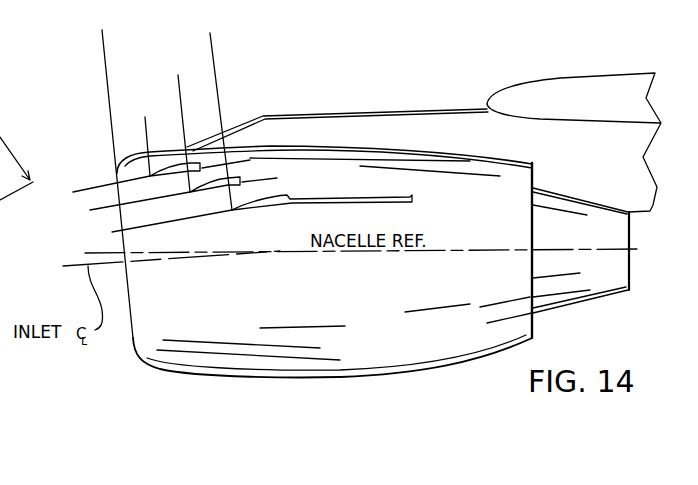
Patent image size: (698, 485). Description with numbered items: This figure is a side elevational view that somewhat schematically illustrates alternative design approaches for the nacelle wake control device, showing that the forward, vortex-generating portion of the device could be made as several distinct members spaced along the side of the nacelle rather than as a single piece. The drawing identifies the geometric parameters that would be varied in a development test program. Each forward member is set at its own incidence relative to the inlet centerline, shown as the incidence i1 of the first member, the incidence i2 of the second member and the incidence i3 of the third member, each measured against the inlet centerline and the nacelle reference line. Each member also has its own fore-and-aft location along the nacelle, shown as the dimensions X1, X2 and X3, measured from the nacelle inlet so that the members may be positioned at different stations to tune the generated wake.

The incidence of first chine relative to inlet centerline i1 is at (73, 192).
The incidence of second chine relative to inlet centerline i2 is at (90, 210).
The incidence of third chine relative to inlet centerline i3 is at (112, 232).
The fore and aft location of first chine X1 is at (155, 126).
The fore and aft location of second chine X2 is at (170, 88).
The fore and aft location of third chine X3 is at (202, 43).